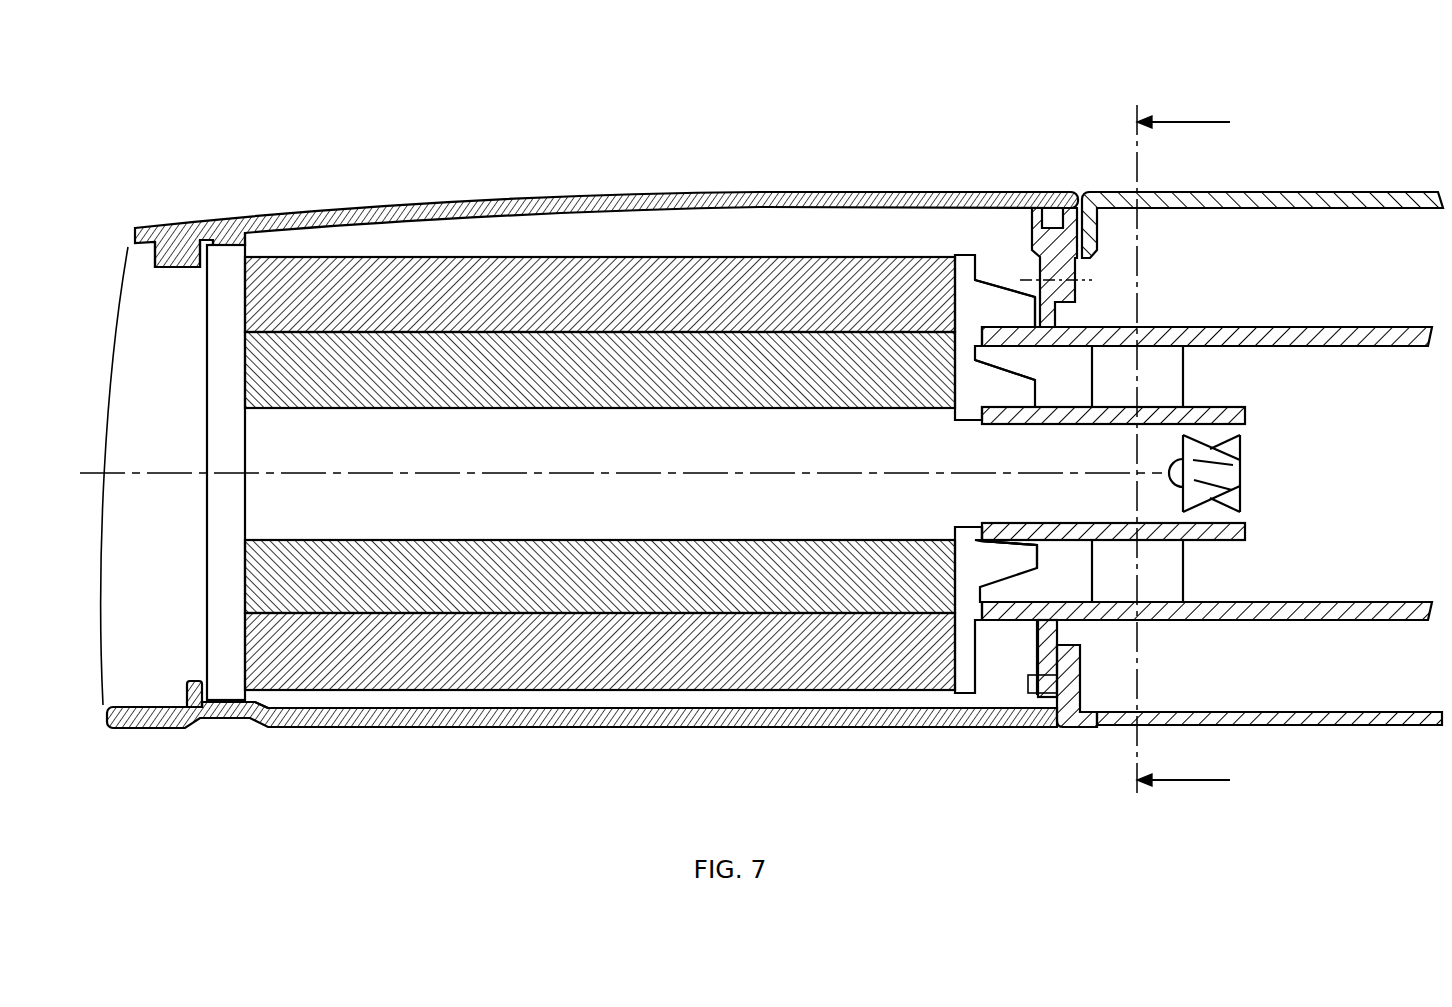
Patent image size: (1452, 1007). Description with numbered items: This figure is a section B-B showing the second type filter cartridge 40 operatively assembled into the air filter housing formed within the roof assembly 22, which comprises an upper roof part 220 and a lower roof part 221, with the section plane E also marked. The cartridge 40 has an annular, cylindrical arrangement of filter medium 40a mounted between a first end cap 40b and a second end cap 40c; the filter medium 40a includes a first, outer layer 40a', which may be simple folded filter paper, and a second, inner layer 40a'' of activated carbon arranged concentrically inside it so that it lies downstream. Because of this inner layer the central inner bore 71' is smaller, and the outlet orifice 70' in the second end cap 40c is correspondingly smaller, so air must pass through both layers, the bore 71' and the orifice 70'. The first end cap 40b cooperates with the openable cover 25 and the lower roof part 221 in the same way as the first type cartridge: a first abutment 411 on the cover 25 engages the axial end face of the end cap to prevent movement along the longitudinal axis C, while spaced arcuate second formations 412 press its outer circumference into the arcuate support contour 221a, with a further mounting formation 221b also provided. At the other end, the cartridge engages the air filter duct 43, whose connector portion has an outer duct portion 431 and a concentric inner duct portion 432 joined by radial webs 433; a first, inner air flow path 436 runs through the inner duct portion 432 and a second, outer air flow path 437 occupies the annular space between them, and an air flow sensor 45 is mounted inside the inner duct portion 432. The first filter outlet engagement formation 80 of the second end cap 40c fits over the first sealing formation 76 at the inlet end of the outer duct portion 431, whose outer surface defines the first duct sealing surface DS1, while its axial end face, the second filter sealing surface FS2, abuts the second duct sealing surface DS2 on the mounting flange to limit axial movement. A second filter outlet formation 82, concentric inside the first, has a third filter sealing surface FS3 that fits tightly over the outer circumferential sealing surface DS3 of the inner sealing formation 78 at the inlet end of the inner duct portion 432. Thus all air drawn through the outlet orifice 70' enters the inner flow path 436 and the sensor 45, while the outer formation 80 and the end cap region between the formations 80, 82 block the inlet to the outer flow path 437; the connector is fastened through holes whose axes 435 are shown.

The roof assembly 22 is at (503, 172).
The openable cover 25 is at (625, 195).
The upper roof part 220 is at (1385, 193).
The lower roof part 221 is at (742, 726).
The arcuate support contour 221a is at (225, 708).
The mounting formation 221b is at (190, 703).
The second type filter cartridge 40 is at (585, 461).
The filter medium 40a is at (600, 375).
The first, outer layer of filter medium 40a' is at (600, 234).
The second, inner layer of filter medium 40a'' is at (600, 395).
The first end cap 40b is at (218, 278).
The second end cap 40c is at (964, 256).
The first abutment 411 is at (190, 262).
The second formations 412 is at (237, 240).
The air filter duct 43 is at (1207, 468).
The outer duct portion 431 is at (1383, 328).
The inner duct portion 432 is at (1250, 413).
The radial webs 433 is at (1168, 588).
The axes of through holes 435 is at (1082, 677).
The first, inner air flow path 436 is at (1076, 463).
The second, outer air flow path 437 is at (1200, 583).
The air flow sensor 45 is at (1232, 472).
The outlet orifice 70' is at (894, 487).
The central inner bore 71' is at (621, 457).
The first sealing formation 76 is at (1044, 451).
The second, inner sealing formation 78 is at (1037, 382).
The first filter outlet engagement formation 80 is at (965, 617).
The second filter outlet formation 82 is at (990, 558).
The first duct sealing surface DS1 is at (1023, 327).
The second duct sealing surface DS2 is at (1036, 262).
The outer circumferential sealing surface DS3 is at (1037, 380).
The second filter sealing surface FS2 is at (1040, 622).
The third filter sealing surface FS3 is at (1022, 540).
The longitudinal axis C is at (170, 473).
The section line E is at (1183, 443).
The section B-B is at (572, 758).